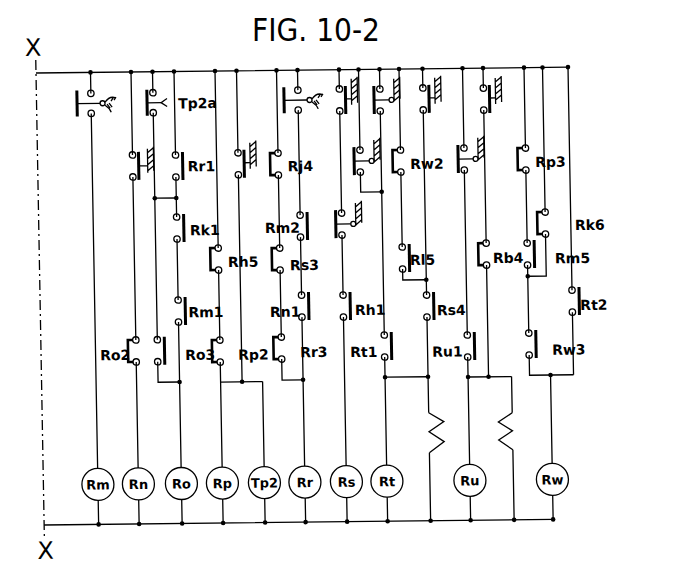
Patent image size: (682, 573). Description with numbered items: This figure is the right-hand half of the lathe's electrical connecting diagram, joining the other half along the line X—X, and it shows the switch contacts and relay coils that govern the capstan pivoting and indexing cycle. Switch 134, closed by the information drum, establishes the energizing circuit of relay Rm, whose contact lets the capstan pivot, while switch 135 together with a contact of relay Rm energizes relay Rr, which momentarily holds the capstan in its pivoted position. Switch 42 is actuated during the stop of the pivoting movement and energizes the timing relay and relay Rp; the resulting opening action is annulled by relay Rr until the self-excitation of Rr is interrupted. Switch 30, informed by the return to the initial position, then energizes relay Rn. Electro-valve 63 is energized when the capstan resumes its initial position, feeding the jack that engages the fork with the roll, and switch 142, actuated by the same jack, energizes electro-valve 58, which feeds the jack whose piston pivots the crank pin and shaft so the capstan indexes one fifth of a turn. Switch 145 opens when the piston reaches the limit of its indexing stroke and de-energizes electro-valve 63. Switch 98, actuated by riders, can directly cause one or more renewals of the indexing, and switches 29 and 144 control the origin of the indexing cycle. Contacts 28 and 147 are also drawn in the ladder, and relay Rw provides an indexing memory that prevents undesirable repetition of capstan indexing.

The switch 134 is at (78, 103).
The switch 30 is at (130, 164).
The switch 42 is at (249, 167).
The switch 135 is at (307, 109).
The switch 29 is at (349, 103).
The contact 28 is at (388, 104).
The switch 98 is at (433, 103).
The switch 142 is at (498, 103).
The switch 145 is at (356, 165).
The contact 147 is at (478, 164).
The switch 144 is at (354, 229).
The electro-valve 63 is at (422, 433).
The electro-valve 58 is at (523, 431).